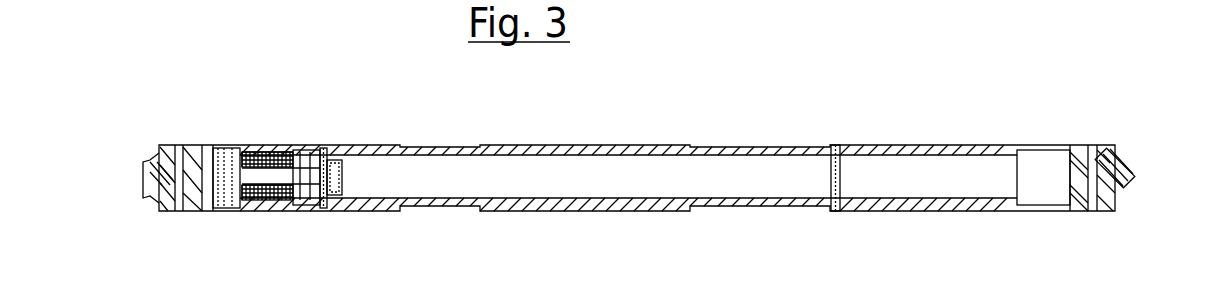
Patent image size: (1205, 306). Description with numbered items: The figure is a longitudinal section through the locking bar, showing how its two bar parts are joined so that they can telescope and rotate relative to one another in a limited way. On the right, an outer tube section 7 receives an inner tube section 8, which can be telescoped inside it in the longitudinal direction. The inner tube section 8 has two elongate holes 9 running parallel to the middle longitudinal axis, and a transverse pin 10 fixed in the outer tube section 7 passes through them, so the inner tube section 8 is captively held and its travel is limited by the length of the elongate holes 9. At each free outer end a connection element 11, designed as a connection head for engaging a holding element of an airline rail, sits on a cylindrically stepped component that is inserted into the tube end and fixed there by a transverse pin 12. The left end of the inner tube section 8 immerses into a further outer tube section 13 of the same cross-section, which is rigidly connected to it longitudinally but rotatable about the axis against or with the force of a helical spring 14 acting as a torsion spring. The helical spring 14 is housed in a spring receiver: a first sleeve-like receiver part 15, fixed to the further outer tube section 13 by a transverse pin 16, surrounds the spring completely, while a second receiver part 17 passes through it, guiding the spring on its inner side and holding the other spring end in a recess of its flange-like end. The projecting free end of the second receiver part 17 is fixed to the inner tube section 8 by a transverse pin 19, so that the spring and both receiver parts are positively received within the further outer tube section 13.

The outer tube section 7 is at (698, 146).
The inner tube section 8 is at (437, 146).
The elongate holes 9 is at (933, 146).
The transverse pin 10 is at (838, 172).
The connection element 11 is at (155, 165).
The transverse pin 12 is at (180, 145).
The further outer tube section 13 is at (260, 145).
The helical spring 14 is at (277, 210).
The first receiver part 15 is at (253, 211).
The transverse pin 16 is at (228, 145).
The second receiver part 17 is at (330, 210).
The transverse pin 19 is at (337, 145).